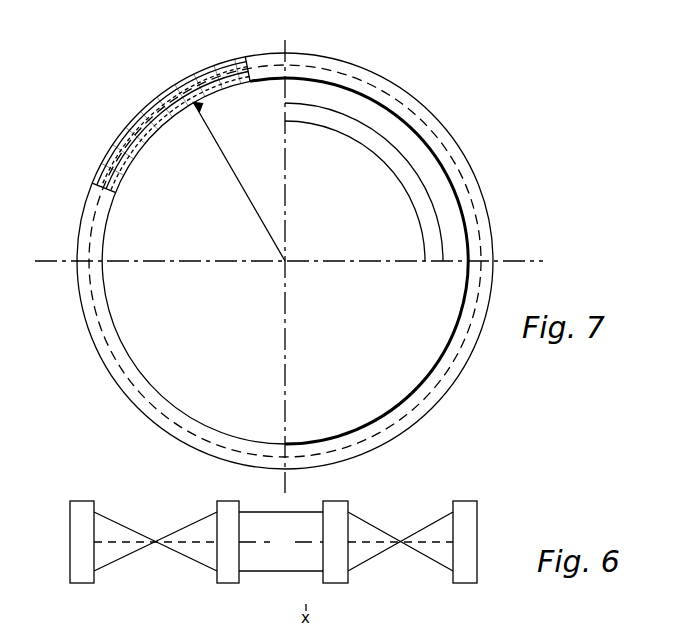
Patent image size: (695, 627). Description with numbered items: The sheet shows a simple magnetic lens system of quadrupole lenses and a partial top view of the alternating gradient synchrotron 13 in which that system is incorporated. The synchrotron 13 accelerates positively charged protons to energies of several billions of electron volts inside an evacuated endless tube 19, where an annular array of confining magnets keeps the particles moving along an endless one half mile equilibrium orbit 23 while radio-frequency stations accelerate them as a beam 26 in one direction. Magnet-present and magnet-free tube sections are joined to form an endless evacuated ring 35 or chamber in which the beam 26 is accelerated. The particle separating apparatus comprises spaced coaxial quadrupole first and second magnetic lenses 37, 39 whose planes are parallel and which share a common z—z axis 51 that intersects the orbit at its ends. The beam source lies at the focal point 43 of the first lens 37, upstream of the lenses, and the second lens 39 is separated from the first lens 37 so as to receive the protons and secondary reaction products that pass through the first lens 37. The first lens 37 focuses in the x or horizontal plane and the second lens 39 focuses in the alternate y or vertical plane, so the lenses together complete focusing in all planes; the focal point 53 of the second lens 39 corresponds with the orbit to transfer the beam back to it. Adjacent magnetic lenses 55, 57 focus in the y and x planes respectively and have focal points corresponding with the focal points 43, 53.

In FIG. 7, the alternating gradient synchrotron 13 is at (291, 249).
In FIG. 7, the evacuated endless tube 19 is at (211, 69).
In FIG. 7, the equilibrium orbit 23 is at (458, 166).
In FIG. 7, the beam 26 is at (185, 431).
In FIG. 7, the endless evacuated ring 35 is at (396, 74).
In FIG. 7, the z—z axis 51 is at (113, 347).
In FIG. 6, the z—z axis 51 is at (312, 545).
In FIG. 6, the adjacent magnetic lens 55 is at (84, 501).
In FIG. 6, the first magnetic lens 37 is at (236, 501).
In FIG. 6, the second magnetic lens 39 is at (340, 501).
In FIG. 6, the adjacent magnetic lens 57 is at (473, 501).
In FIG. 6, the focal point 43 is at (155, 542).
In FIG. 6, the focal point 53 is at (401, 542).